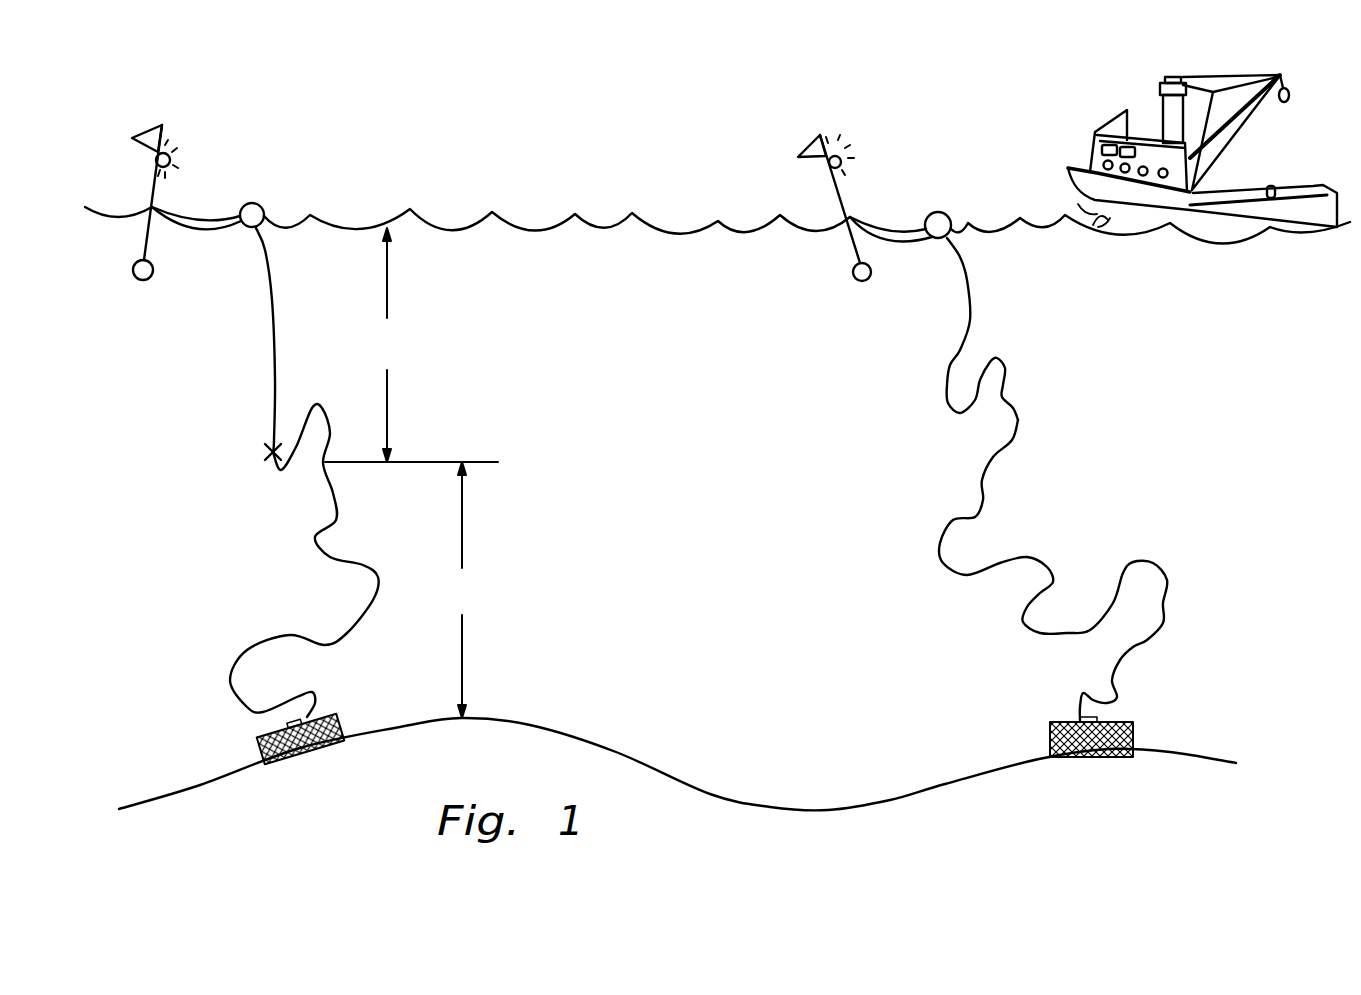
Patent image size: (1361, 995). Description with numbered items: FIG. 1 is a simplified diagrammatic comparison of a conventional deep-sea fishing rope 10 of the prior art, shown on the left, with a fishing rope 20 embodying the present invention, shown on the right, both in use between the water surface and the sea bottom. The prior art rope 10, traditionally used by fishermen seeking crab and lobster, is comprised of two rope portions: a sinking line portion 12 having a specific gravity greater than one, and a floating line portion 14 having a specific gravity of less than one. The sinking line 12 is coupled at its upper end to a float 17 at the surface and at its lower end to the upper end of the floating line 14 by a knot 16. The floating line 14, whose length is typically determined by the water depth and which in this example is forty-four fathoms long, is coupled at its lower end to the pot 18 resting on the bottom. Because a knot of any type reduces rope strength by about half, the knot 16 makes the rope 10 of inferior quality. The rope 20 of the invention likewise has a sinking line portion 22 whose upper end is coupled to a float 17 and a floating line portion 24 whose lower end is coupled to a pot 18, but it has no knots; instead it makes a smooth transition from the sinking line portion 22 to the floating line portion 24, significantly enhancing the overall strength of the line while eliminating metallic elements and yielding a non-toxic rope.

The fishing rope 10 is at (597, 427).
The sinking line portion 12 is at (244, 237).
The floating line portion 14 is at (229, 467).
The knot 16 is at (262, 455).
The float 17 is at (258, 203).
The pot 18 is at (343, 733).
The fishing rope 20 is at (868, 442).
The sinking line portion 22 is at (925, 247).
The floating line portion 24 is at (927, 432).